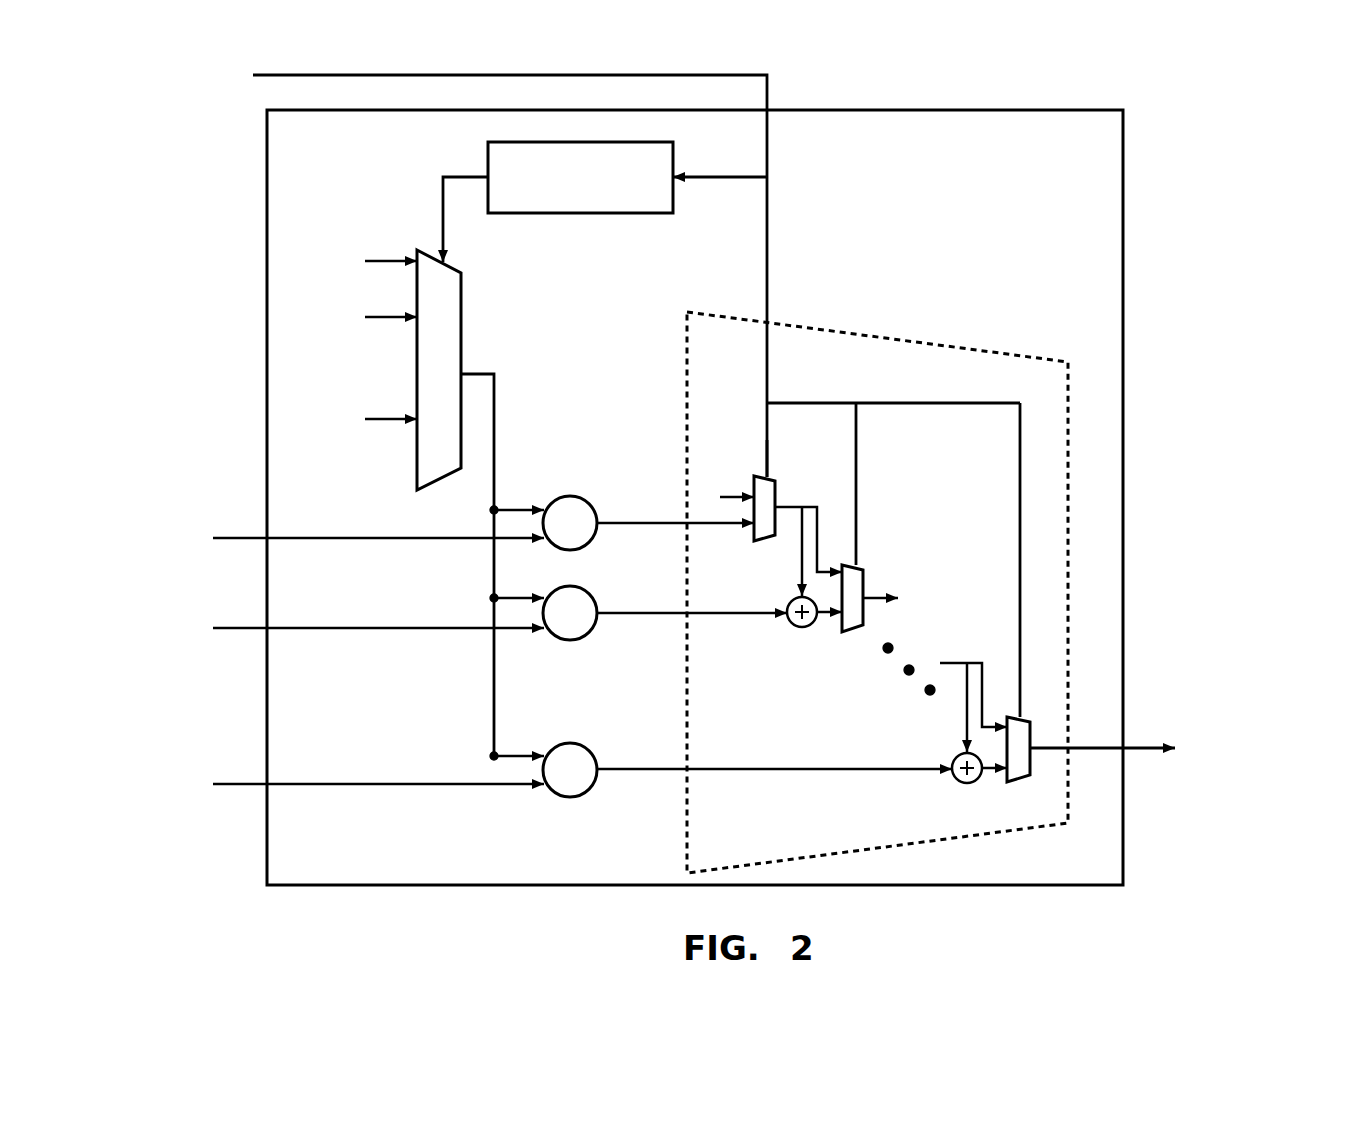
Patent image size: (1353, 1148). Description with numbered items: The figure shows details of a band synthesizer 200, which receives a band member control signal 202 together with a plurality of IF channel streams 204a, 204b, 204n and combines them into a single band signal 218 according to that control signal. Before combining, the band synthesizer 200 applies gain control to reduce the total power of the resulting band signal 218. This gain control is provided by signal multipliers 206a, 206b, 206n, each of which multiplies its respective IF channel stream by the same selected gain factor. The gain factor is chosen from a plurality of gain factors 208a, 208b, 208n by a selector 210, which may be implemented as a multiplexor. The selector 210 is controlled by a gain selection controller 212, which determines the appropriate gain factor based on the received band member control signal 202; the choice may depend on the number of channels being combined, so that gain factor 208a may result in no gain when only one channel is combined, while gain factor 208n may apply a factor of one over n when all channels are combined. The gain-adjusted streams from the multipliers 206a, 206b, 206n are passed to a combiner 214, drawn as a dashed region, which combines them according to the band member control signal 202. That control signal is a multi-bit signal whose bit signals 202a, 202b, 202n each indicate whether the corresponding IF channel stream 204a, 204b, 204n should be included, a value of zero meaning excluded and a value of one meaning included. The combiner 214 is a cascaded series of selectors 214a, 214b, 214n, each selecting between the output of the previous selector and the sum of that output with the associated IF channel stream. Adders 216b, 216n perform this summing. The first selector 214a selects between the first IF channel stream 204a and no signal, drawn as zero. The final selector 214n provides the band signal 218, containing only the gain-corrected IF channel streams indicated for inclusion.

The band synthesizer 200 is at (985, 110).
The band member control signal 202 is at (767, 90).
The bit signal 202a is at (767, 440).
The bit signal 202b is at (856, 440).
The bit signal 202n is at (1020, 438).
The IF channel stream 204a is at (152, 495).
The IF channel stream 204b is at (168, 662).
The IF channel stream 204n is at (175, 812).
The signal multiplier 206a is at (618, 488).
The signal multiplier 206b is at (618, 578).
The signal multiplier 206n is at (618, 735).
The gain factor 208a is at (338, 243).
The gain factor 208b is at (345, 330).
The gain factor 208n is at (345, 440).
The selector 210 is at (461, 310).
The gain selection controller 212 is at (652, 213).
The combiner 214 is at (930, 345).
The selector 214a is at (827, 480).
The selector 214b is at (912, 555).
The selector 214n is at (1013, 717).
The adder 216b is at (802, 633).
The adder 216n is at (967, 785).
The band signal 218 is at (1200, 728).